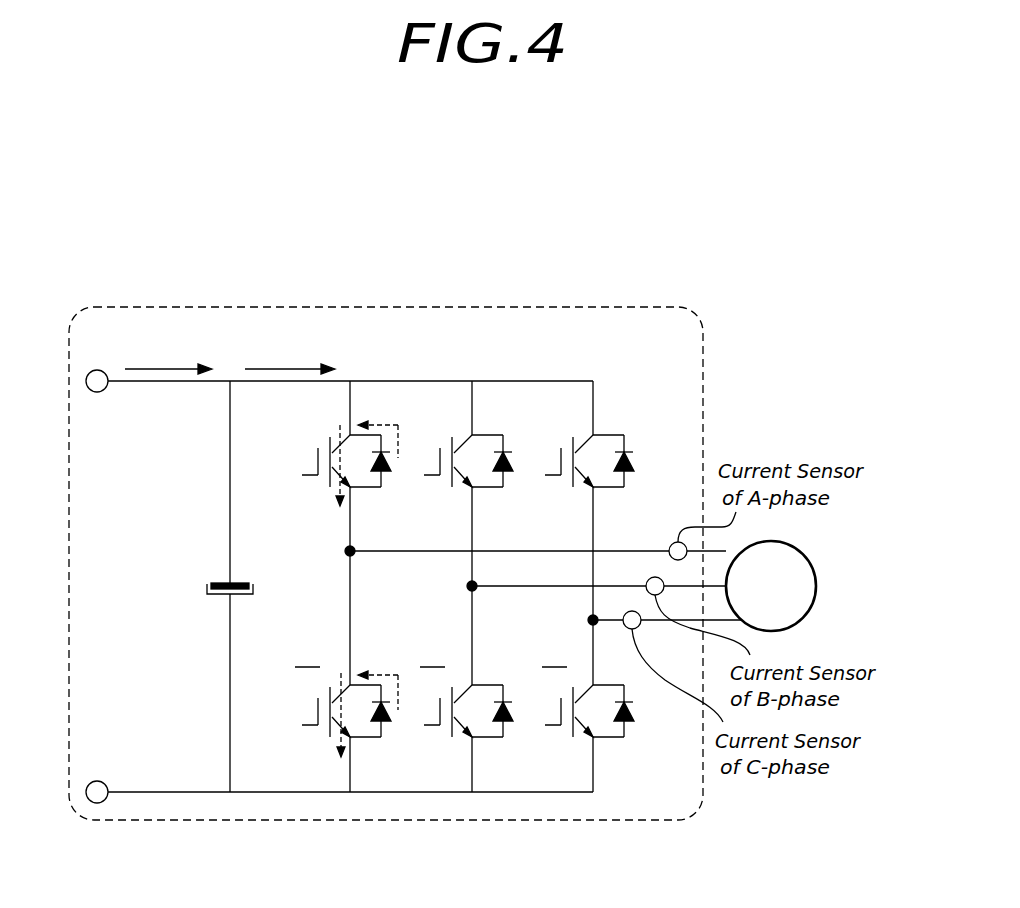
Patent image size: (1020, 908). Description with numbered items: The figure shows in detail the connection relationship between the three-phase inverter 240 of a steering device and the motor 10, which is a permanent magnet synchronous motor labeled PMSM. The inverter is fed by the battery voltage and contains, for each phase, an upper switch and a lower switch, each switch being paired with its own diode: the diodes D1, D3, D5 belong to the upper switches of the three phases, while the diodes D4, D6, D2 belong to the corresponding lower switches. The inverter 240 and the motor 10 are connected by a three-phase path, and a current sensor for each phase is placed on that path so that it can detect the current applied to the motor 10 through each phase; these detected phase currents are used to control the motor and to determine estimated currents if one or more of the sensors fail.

The three-phase inverter 240 is at (385, 307).
The motor 10 is at (817, 586).
The diode D1 is at (356, 472).
The diode D3 is at (478, 472).
The diode D5 is at (599, 472).
The diode D4 is at (356, 722).
The diode D6 is at (478, 722).
The diode D2 is at (599, 722).